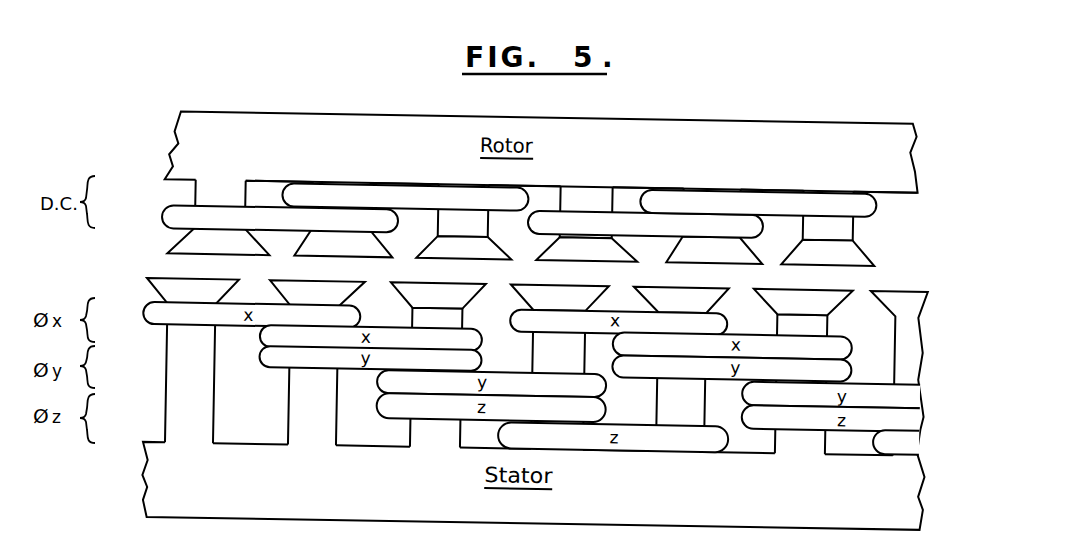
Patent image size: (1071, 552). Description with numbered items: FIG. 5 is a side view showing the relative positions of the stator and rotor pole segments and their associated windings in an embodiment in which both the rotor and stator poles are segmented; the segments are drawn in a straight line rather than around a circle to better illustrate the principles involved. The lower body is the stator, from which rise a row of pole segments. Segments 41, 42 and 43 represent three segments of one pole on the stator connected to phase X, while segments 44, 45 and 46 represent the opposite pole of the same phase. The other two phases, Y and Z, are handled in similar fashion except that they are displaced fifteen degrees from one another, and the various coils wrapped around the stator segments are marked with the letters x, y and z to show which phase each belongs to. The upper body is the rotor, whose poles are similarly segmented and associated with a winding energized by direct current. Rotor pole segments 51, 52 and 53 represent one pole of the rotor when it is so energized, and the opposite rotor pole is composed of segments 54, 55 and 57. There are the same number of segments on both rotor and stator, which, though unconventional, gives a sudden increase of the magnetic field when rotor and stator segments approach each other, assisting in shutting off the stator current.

The stator pole segment 41 is at (203, 298).
The stator pole segment 42 is at (308, 298).
The stator pole segment 43 is at (427, 298).
The stator pole segment 44 is at (553, 298).
The stator pole segment 45 is at (670, 298).
The stator pole segment 46 is at (794, 298).
The rotor pole segment 51 is at (204, 250).
The rotor pole segment 52 is at (333, 250).
The rotor pole segment 53 is at (449, 250).
The rotor pole segment 54 is at (574, 250).
The rotor pole segment 55 is at (702, 250).
The rotor pole segment 57 is at (818, 250).